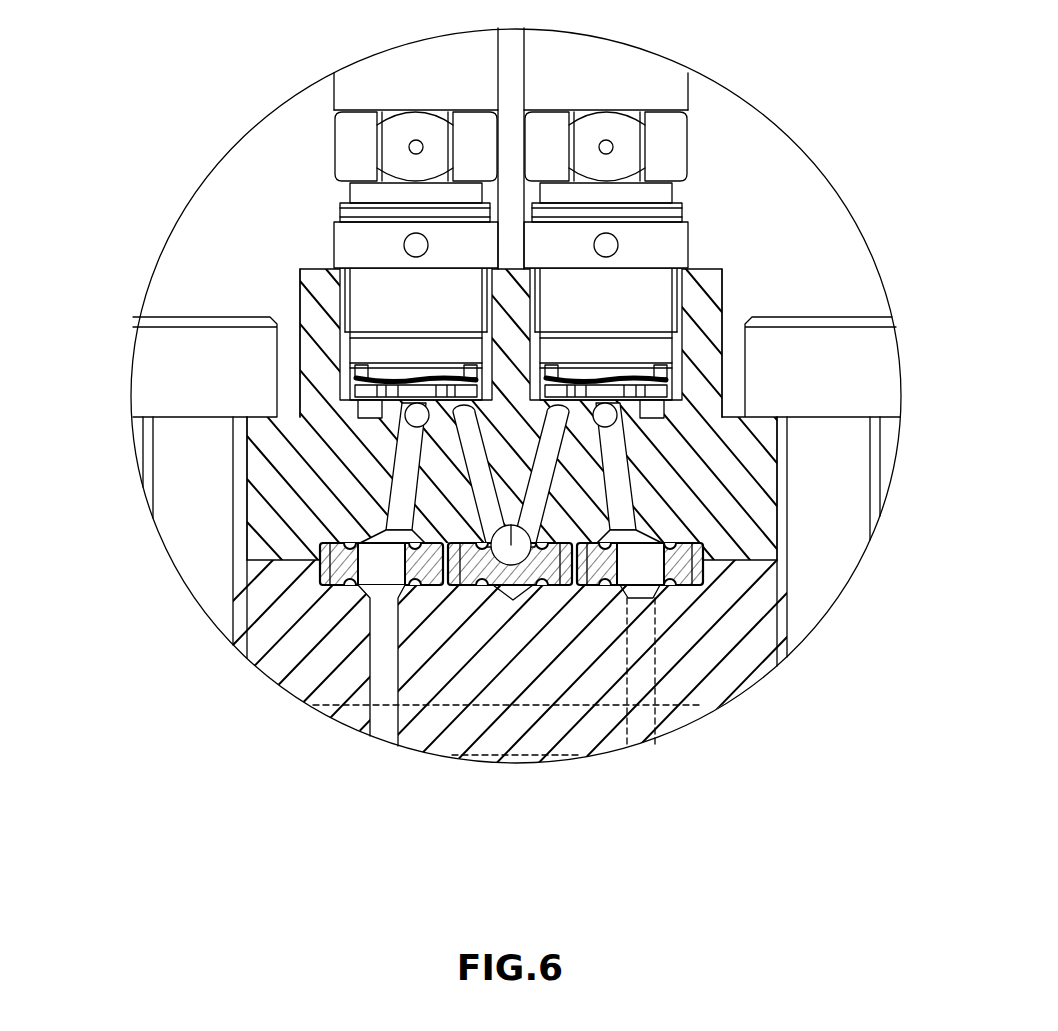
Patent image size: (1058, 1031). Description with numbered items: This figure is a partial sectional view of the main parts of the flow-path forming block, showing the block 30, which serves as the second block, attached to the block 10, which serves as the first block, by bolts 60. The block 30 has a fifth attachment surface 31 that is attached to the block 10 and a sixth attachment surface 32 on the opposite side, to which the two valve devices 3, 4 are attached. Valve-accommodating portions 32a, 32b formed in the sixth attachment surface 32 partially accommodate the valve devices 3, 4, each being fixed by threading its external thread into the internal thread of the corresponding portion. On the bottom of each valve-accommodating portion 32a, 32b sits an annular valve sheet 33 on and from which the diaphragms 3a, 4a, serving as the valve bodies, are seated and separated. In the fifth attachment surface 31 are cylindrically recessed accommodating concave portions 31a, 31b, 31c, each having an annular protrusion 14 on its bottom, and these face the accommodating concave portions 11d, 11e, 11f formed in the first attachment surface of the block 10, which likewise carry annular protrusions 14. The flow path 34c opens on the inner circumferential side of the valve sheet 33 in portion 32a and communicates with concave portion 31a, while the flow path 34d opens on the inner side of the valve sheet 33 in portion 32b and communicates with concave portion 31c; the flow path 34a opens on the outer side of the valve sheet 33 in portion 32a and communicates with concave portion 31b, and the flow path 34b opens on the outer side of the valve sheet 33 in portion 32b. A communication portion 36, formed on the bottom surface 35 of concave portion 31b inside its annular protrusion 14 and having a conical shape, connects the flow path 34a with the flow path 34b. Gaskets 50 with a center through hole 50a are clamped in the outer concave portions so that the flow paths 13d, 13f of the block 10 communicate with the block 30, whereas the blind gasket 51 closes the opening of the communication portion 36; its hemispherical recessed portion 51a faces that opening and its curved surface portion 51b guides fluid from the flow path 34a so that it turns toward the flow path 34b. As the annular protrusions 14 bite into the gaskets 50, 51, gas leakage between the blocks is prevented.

The valve device 3 is at (413, 62).
The valve device 4 is at (608, 62).
The diaphragm 3a is at (415, 378).
The diaphragm 4a is at (607, 387).
The block 10 is at (285, 625).
The accommodating concave portion 11d is at (270, 570).
The accommodating concave portion 11e is at (475, 585).
The accommodating concave portion 11f is at (752, 570).
The flow path 13d is at (385, 712).
The flow path 13f is at (640, 690).
The annular protrusion 14 is at (307, 488).
The block 30 is at (307, 483).
The fifth attachment surface 31 is at (320, 573).
The accommodating concave portion 31a is at (322, 566).
The accommodating concave portion 31b is at (482, 600).
The accommodating concave portion 31c is at (700, 566).
The sixth attachment surface 32 is at (510, 272).
The valve-accommodating portion 32a is at (345, 285).
The valve-accommodating portion 32b is at (677, 285).
The valve sheet 33 is at (380, 378).
The flow path 34a is at (370, 392).
The flow path 34b is at (745, 370).
The flow path 34c is at (315, 540).
The flow path 34d is at (707, 540).
The bottom surface 35 is at (593, 585).
The communication portion 36 is at (747, 412).
The gasket 50 is at (322, 560).
The through hole 50a is at (353, 587).
The gasket 51 is at (562, 585).
The recessed portion 51a is at (537, 585).
The curved surface portion 51b is at (340, 440).
The bolt 60 is at (150, 345).